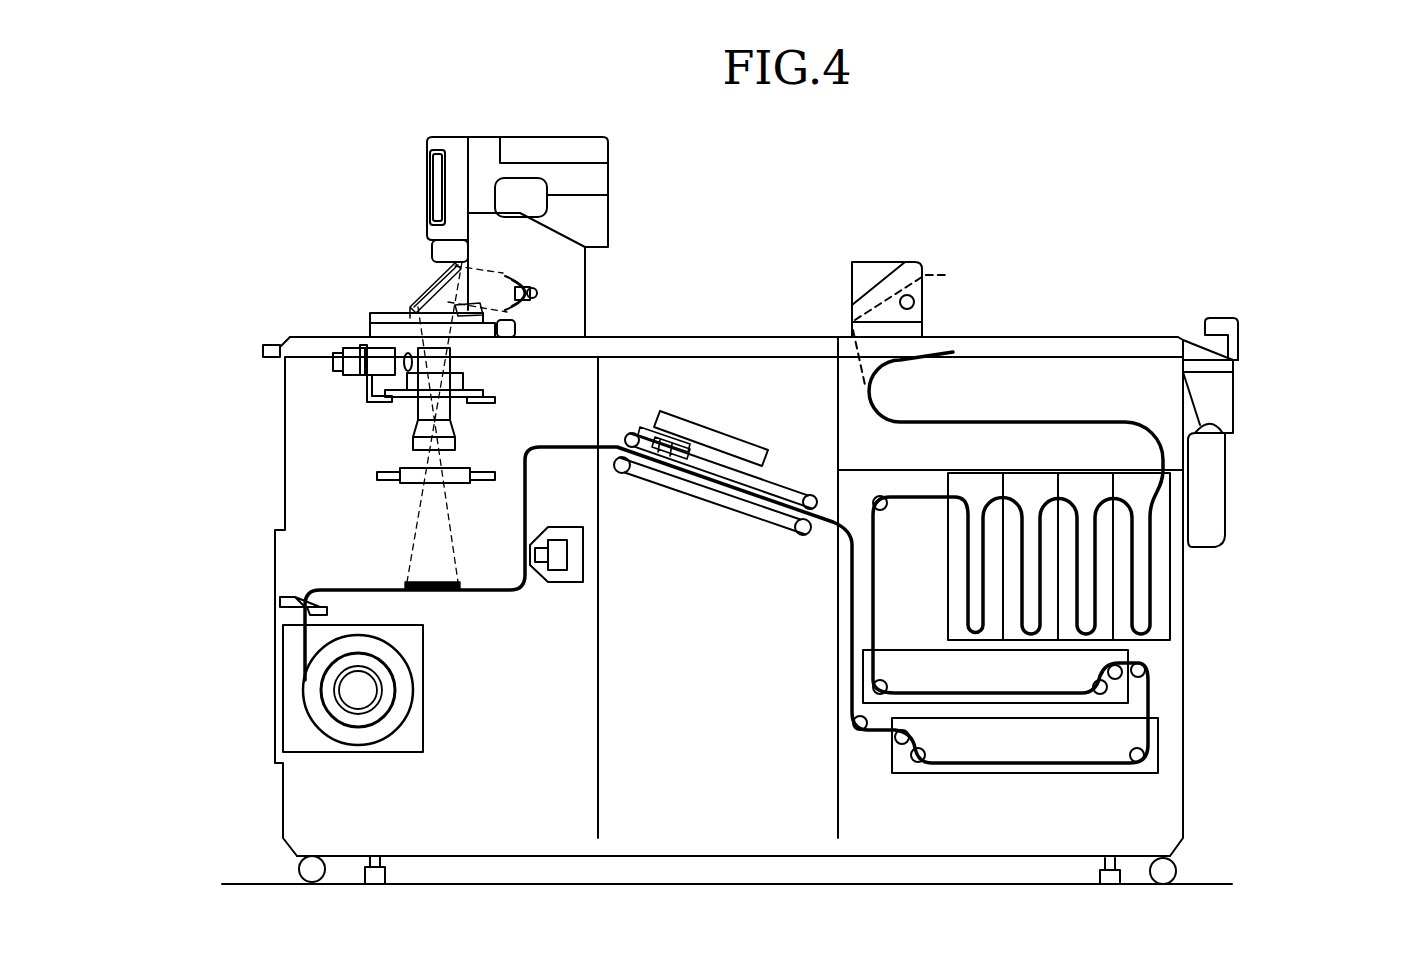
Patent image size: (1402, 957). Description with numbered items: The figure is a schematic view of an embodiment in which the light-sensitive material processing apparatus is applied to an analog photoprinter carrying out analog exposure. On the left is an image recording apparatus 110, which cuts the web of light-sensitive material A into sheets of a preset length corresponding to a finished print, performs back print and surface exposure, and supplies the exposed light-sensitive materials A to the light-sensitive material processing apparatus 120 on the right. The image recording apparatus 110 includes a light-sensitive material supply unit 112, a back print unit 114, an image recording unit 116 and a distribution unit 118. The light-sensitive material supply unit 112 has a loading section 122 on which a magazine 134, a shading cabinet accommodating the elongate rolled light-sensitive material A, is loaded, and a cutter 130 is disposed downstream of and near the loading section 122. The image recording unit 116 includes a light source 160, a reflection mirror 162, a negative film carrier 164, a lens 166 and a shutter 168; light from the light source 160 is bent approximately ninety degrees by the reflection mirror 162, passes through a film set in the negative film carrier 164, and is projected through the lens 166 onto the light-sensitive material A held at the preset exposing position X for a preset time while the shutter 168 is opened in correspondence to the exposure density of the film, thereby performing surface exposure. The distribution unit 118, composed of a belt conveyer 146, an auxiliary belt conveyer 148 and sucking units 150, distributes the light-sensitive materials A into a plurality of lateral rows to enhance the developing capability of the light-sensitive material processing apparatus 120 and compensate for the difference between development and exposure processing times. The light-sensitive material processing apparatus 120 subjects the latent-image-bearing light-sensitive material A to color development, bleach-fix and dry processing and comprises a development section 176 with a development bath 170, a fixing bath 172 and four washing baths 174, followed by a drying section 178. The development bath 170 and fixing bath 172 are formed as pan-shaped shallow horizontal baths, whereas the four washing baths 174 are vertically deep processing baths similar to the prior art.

The image recording apparatus 110 is at (302, 303).
The light-sensitive material supply unit 112 is at (429, 730).
The back print unit 114 is at (555, 572).
The image recording unit 116 is at (428, 397).
The distribution unit 118 is at (705, 425).
The light-sensitive material processing apparatus 120 is at (1094, 488).
The loading section 122 is at (437, 727).
The cutter 130 is at (285, 598).
The magazine 134 is at (419, 726).
The light-sensitive material A is at (345, 750).
The exposing position X is at (450, 580).
The belt conveyer 146 is at (772, 532).
The auxiliary belt conveyer 148 is at (790, 497).
The sucking unit 150 is at (643, 460).
The light source 160 is at (536, 267).
The reflection mirror 162 is at (430, 276).
The negative film carrier 164 is at (388, 318).
The lens 166 is at (448, 411).
The shutter 168 is at (388, 468).
The development bath 170 is at (975, 752).
The fixing bath 172 is at (1050, 680).
The washing baths 174 is at (1158, 585).
The development section 176 is at (1195, 706).
The drying section 178 is at (945, 312).